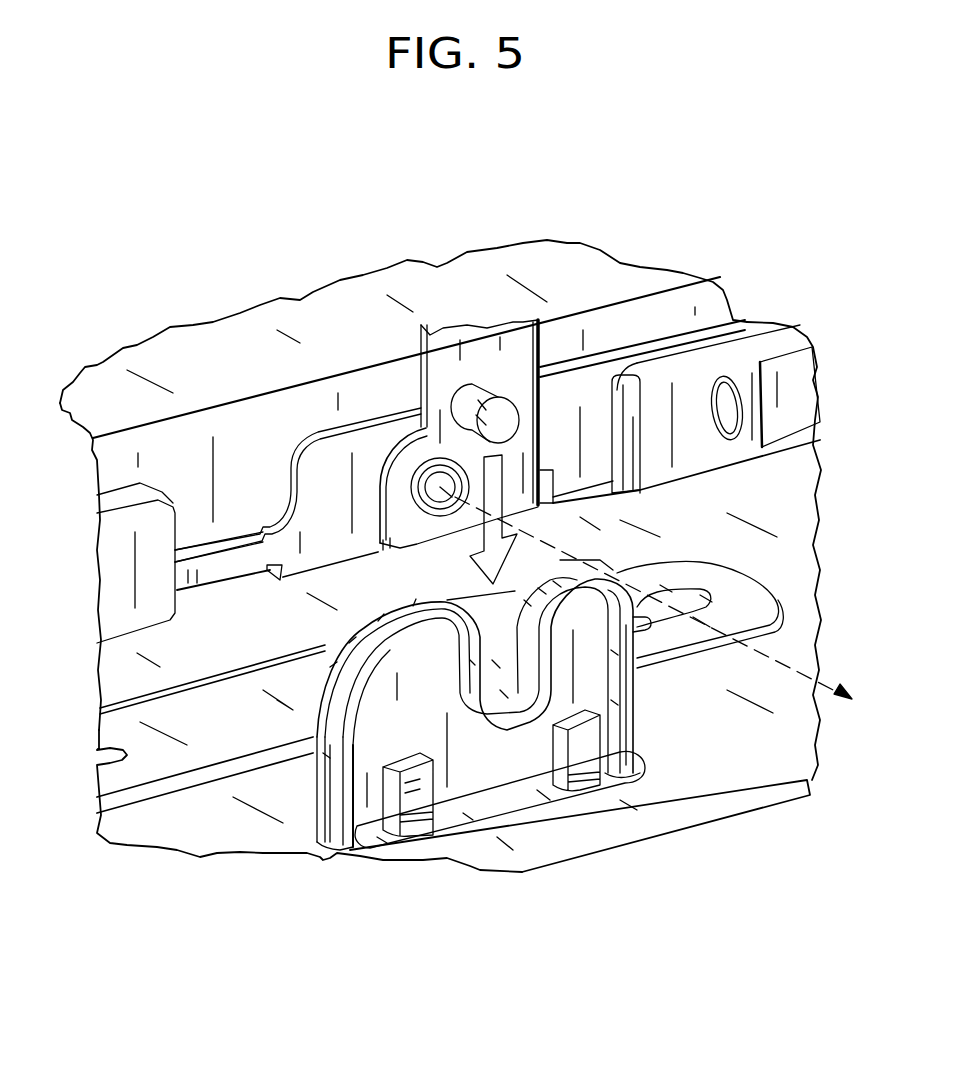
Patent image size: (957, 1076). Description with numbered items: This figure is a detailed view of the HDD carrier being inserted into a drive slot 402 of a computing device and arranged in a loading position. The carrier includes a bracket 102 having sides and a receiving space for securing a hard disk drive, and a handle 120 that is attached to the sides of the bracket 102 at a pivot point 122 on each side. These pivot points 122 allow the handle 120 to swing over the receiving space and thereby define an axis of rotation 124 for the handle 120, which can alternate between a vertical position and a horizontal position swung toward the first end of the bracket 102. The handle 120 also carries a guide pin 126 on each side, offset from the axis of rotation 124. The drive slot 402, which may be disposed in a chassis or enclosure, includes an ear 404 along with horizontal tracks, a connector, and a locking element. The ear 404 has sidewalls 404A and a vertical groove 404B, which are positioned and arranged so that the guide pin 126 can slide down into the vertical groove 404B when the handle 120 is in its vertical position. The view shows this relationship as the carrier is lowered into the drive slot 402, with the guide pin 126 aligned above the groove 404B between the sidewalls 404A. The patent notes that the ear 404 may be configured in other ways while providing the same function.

The bracket 102 is at (607, 353).
The handle 120 is at (548, 349).
The pivot point 122 is at (380, 485).
The axis of rotation 124 is at (793, 665).
The guide pin 126 is at (468, 398).
The drive slot 402 is at (220, 810).
The ear 404 is at (337, 673).
The sidewalls 404A is at (456, 670).
The vertical groove 404B is at (496, 683).